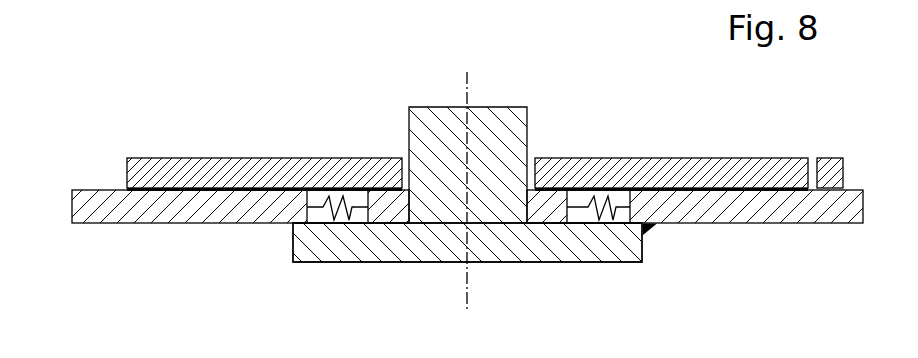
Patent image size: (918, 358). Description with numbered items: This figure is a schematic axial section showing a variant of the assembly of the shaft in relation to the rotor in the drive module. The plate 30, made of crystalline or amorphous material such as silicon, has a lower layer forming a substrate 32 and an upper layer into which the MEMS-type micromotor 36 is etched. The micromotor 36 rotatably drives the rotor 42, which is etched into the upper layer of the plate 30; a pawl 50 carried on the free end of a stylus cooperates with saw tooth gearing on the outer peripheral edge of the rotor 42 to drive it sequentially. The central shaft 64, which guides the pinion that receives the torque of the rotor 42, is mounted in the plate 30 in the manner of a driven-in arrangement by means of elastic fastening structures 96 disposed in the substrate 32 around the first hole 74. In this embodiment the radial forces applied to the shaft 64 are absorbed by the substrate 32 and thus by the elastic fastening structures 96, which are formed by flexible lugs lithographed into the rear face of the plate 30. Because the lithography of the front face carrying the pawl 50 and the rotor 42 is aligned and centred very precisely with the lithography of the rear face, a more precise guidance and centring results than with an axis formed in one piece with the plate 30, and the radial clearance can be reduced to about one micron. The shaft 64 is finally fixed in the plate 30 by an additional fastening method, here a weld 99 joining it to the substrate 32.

The plate 30 is at (449, 229).
The substrate 32 is at (147, 213).
The micromotor 36 is at (355, 90).
The rotor 42 is at (210, 158).
The pawl 50 is at (830, 158).
The central shaft 64 is at (437, 107).
The first hole 74 is at (396, 224).
The elastic fastening structures 96 is at (333, 224).
The weld 99 is at (291, 224).